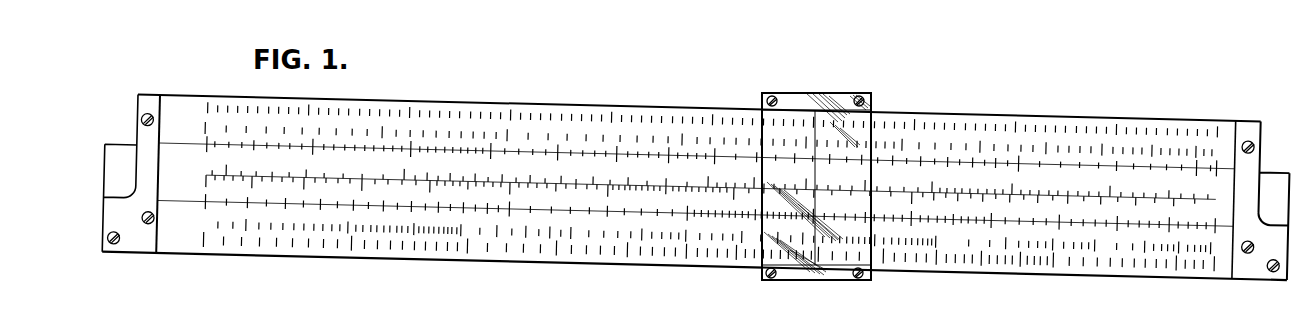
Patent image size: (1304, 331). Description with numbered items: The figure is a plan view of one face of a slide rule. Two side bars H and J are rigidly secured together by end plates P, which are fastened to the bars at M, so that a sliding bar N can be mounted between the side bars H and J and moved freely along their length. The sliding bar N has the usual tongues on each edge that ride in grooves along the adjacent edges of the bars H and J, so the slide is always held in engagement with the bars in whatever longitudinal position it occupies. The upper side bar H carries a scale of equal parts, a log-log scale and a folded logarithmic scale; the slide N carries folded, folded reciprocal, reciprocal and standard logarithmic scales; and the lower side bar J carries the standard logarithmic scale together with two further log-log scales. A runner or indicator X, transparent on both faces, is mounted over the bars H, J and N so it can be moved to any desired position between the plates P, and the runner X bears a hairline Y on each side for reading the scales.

The side bar H is at (425, 77).
The side bar J is at (200, 237).
The sliding bar N is at (118, 158).
The securing point M is at (150, 108).
The plate P is at (133, 240).
The runner X is at (788, 272).
The hairline Y is at (818, 240).